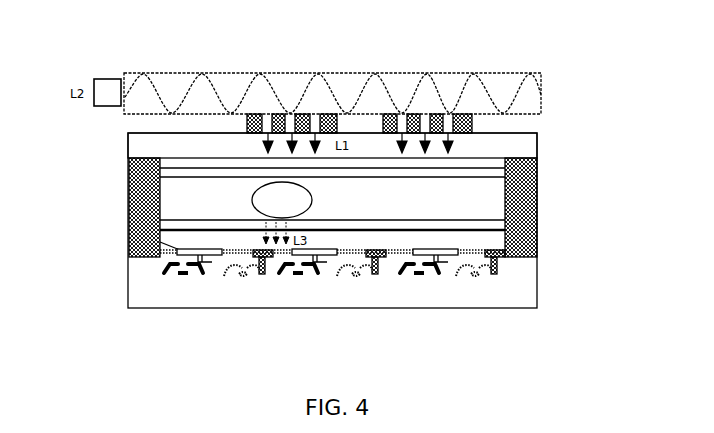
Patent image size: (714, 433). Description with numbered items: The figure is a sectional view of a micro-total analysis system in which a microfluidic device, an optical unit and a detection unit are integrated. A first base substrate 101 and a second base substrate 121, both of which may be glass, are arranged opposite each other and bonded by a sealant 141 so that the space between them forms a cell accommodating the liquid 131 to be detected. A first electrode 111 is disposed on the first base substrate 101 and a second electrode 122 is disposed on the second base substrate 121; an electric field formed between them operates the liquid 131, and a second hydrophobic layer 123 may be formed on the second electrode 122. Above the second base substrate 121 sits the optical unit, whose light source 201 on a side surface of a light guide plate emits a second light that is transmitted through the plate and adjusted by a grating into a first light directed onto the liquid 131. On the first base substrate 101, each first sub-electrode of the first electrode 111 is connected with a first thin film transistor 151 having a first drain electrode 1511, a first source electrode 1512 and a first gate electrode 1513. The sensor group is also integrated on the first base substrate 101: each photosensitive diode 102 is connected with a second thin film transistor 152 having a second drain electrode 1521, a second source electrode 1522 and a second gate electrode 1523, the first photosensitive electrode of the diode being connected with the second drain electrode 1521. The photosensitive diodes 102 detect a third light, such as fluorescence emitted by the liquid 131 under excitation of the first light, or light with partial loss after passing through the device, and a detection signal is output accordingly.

The light source 201 is at (103, 90).
The first base substrate 101 is at (523, 277).
The photosensitive diode 102 is at (497, 263).
The first electrode 111 is at (130, 236).
The second base substrate 121 is at (520, 148).
The second electrode 122 is at (483, 165).
The second hydrophobic layer 123 is at (537, 192).
The liquid to be detected 131 is at (272, 197).
The sealant 141 is at (537, 227).
The first thin film transistor 151 is at (242, 313).
The first drain electrode 1511 is at (195, 275).
The first source electrode 1512 is at (169, 275).
The first gate electrode 1513 is at (181, 275).
The second thin film transistor 152 is at (416, 314).
The second drain electrode 1521 is at (374, 275).
The second source electrode 1522 is at (345, 275).
The second gate electrode 1523 is at (358, 275).